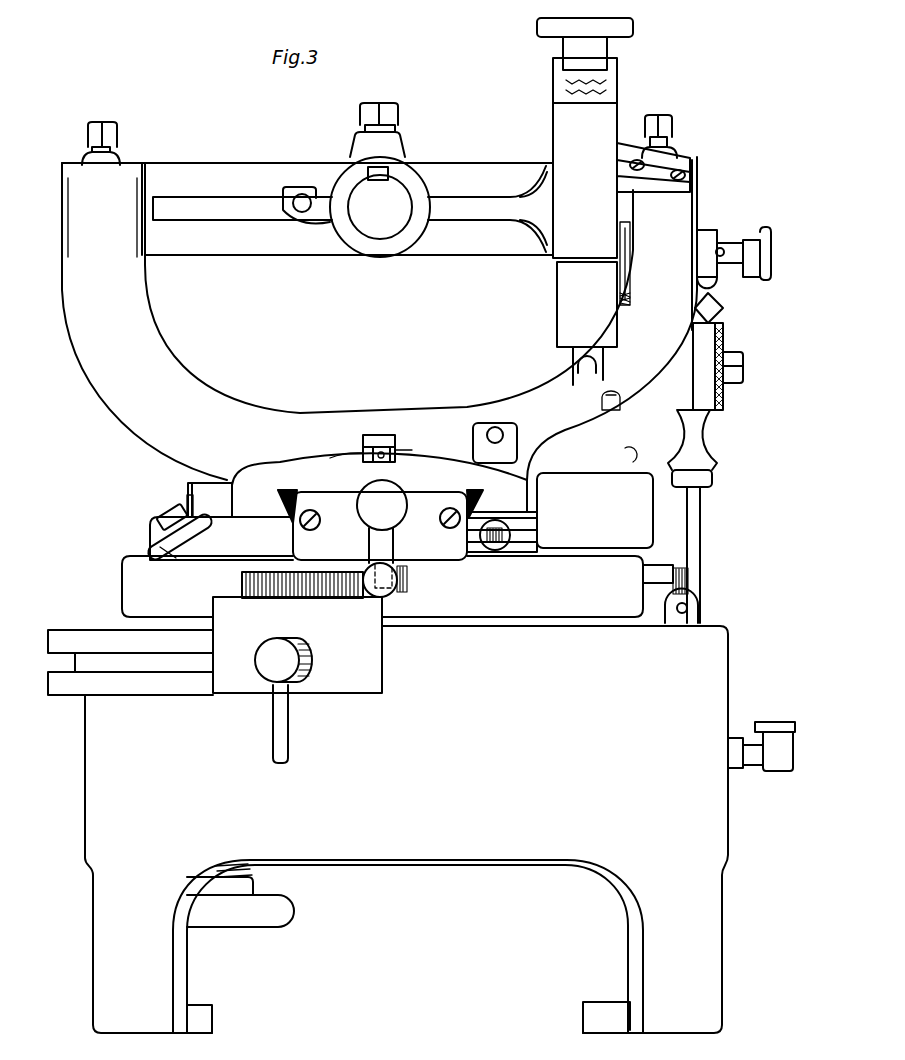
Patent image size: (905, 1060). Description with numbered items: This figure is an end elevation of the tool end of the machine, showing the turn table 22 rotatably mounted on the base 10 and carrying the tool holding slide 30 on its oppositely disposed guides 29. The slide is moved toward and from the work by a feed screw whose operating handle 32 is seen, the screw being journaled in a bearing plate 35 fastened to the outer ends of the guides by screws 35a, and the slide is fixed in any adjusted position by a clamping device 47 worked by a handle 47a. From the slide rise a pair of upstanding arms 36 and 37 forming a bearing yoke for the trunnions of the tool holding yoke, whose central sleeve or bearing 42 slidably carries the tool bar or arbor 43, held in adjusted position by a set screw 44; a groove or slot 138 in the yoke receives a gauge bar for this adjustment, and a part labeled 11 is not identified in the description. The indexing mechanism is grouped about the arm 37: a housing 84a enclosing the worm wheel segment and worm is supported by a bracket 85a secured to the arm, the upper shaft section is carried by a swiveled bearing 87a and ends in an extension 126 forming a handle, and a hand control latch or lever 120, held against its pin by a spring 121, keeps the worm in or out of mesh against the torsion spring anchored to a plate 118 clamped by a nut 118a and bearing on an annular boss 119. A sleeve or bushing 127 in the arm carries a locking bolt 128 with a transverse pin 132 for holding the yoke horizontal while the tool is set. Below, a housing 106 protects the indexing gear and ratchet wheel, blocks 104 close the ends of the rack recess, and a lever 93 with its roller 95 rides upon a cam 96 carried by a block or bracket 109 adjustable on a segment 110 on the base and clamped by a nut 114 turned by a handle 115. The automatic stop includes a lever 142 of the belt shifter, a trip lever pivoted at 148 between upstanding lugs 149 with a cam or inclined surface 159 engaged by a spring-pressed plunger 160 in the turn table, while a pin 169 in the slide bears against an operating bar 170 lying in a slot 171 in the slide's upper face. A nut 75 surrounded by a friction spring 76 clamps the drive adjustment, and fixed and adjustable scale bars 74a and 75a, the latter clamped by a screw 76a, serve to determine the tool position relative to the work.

The base 10 is at (728, 677).
The horizontal arm 11 is at (214, 166).
The turn table 22 is at (603, 596).
The guides 29 is at (280, 498).
The tool holding slide 30 is at (277, 467).
The operating handle 32 is at (376, 552).
The bearing plate 35 is at (380, 525).
The screws 35a is at (294, 536).
The upstanding arm 36 is at (133, 291).
The upstanding arm 37 is at (677, 224).
The sleeve or bearing 42 is at (380, 251).
The tool bar or arbor 43 is at (405, 197).
The set screw 44 is at (398, 126).
The clamping device 47 is at (497, 428).
The handle 47a is at (512, 426).
The fixed scale bar 74a is at (152, 547).
The nut 75 is at (292, 915).
The adjustable scale bar 75a is at (174, 560).
The spring 76 is at (170, 517).
The screw 76a is at (192, 499).
The housing 84a is at (606, 113).
The bracket 85a is at (678, 162).
The swiveled bearing 87a is at (568, 293).
The lever 93 is at (497, 546).
The roller 95 is at (408, 580).
The cam 96 is at (330, 598).
The blocks 104 is at (526, 511).
The housing 106 is at (604, 521).
The block or bracket 109 is at (380, 677).
The segment 110 is at (157, 678).
The nut 114 is at (310, 662).
The handle 115 is at (290, 728).
The plate 118 is at (725, 331).
The nut 118a is at (744, 358).
The annular boss 119 is at (663, 406).
The hand control latch or lever 120 is at (622, 270).
The spring 121 is at (622, 310).
The extension 126 is at (603, 53).
The sleeve or bushing 127 is at (712, 238).
The locking bolt 128 is at (738, 262).
The pin 132 is at (728, 243).
The groove or slot 138 is at (300, 211).
The lever 142 is at (701, 513).
The pivot 148 is at (698, 598).
The upstanding lugs 149 is at (693, 612).
The cam or inclined surface 159 is at (688, 580).
The spring-pressed plunger 160 is at (655, 568).
The pin 169 is at (363, 457).
The operating bar 170 is at (383, 436).
The slot 171 is at (412, 452).